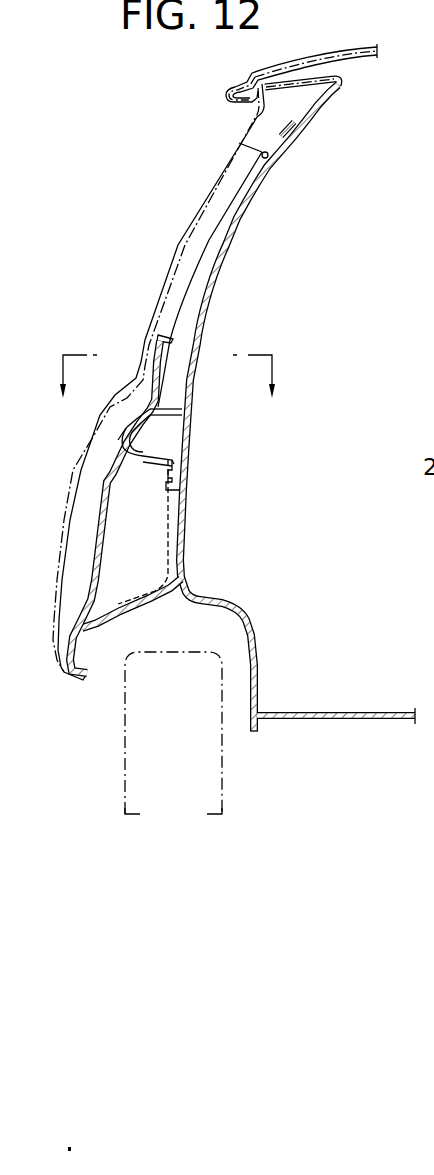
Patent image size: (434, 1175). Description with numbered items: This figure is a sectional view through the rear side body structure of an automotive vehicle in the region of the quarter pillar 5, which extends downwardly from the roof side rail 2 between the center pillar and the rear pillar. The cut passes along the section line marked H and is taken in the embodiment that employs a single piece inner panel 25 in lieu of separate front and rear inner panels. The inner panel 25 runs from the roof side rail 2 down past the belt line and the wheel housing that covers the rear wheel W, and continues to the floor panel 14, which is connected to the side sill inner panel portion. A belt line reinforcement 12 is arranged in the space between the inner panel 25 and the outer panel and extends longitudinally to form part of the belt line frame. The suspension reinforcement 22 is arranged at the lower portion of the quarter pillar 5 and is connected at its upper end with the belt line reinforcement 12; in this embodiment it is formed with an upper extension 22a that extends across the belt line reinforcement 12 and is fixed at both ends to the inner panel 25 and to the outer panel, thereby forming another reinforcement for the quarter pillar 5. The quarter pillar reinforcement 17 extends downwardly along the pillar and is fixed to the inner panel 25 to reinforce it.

The roof side rail 2 is at (238, 116).
The quarter pillar 5 is at (188, 189).
The quarter pillar reinforcement 17 is at (268, 155).
The single piece inner panel 25 is at (232, 252).
The upper extension 22a is at (160, 337).
The suspension reinforcement 22 is at (100, 507).
The belt line reinforcement 12 is at (137, 458).
The floor panel 14 is at (341, 710).
The rear wheel W is at (125, 735).
The section line H is at (166, 376).